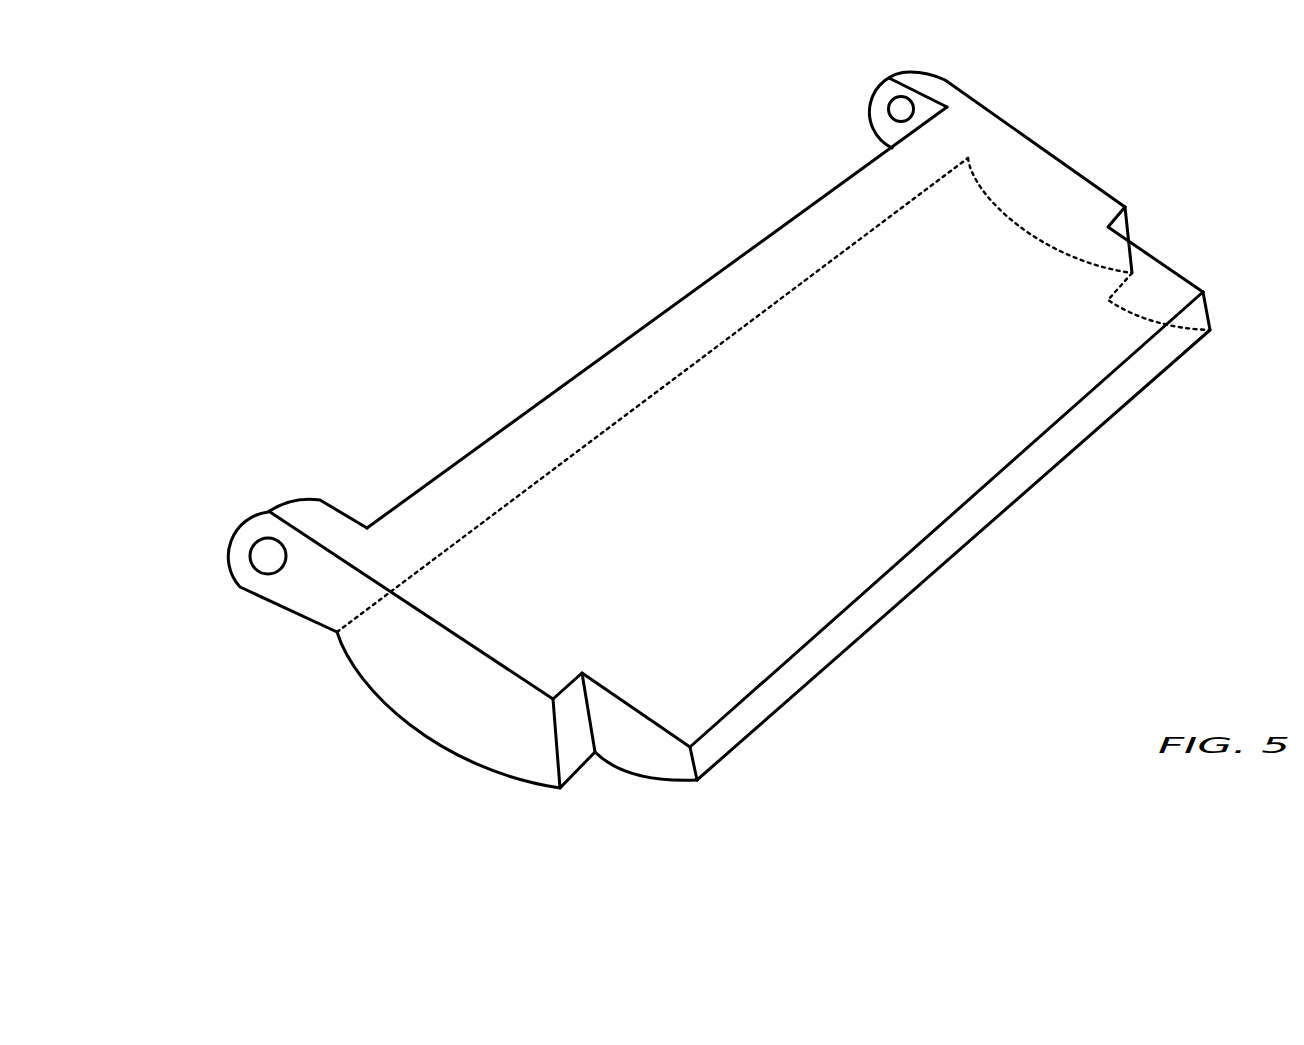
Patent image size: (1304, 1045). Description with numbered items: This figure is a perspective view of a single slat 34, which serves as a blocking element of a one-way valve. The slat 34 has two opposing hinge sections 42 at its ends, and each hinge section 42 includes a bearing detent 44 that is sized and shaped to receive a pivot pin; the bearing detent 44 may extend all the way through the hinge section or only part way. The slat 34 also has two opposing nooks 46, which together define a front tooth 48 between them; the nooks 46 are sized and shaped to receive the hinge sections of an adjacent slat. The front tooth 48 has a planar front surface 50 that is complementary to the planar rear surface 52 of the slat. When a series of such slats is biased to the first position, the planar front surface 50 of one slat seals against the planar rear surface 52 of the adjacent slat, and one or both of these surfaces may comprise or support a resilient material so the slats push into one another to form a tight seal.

The slat 34 is at (677, 421).
The hinge section 42 is at (630, 322).
The bearing detent 44 is at (267, 558).
The nook 46 is at (612, 785).
The front tooth 48 is at (677, 421).
The planar front surface 50 is at (953, 540).
The planar rear surface 52 is at (670, 348).